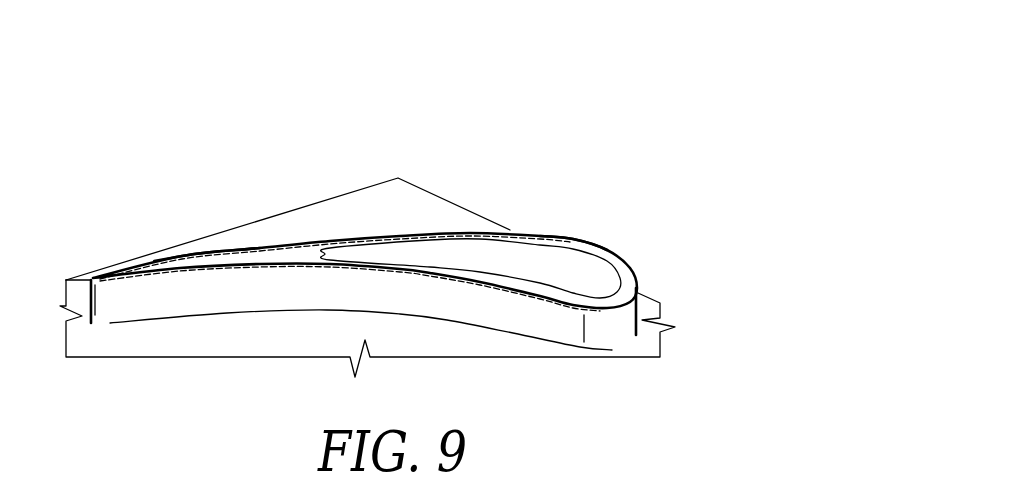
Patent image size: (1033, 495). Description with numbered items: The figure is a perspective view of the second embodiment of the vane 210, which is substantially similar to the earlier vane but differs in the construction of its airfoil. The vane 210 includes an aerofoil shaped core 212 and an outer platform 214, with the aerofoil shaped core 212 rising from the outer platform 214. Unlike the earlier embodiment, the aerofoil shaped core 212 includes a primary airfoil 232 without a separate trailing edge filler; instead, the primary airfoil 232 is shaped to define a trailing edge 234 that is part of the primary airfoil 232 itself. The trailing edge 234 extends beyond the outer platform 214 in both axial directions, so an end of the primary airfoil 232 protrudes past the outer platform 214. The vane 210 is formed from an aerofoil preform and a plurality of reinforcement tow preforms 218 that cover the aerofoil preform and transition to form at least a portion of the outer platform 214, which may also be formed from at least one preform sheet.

The vane 210 is at (451, 206).
The aerofoil shaped core 212 is at (616, 245).
The outer platform 214 is at (425, 186).
The reinforcement tow preform 218 is at (646, 297).
The primary airfoil 232 is at (568, 241).
The trailing edge 234 is at (181, 255).